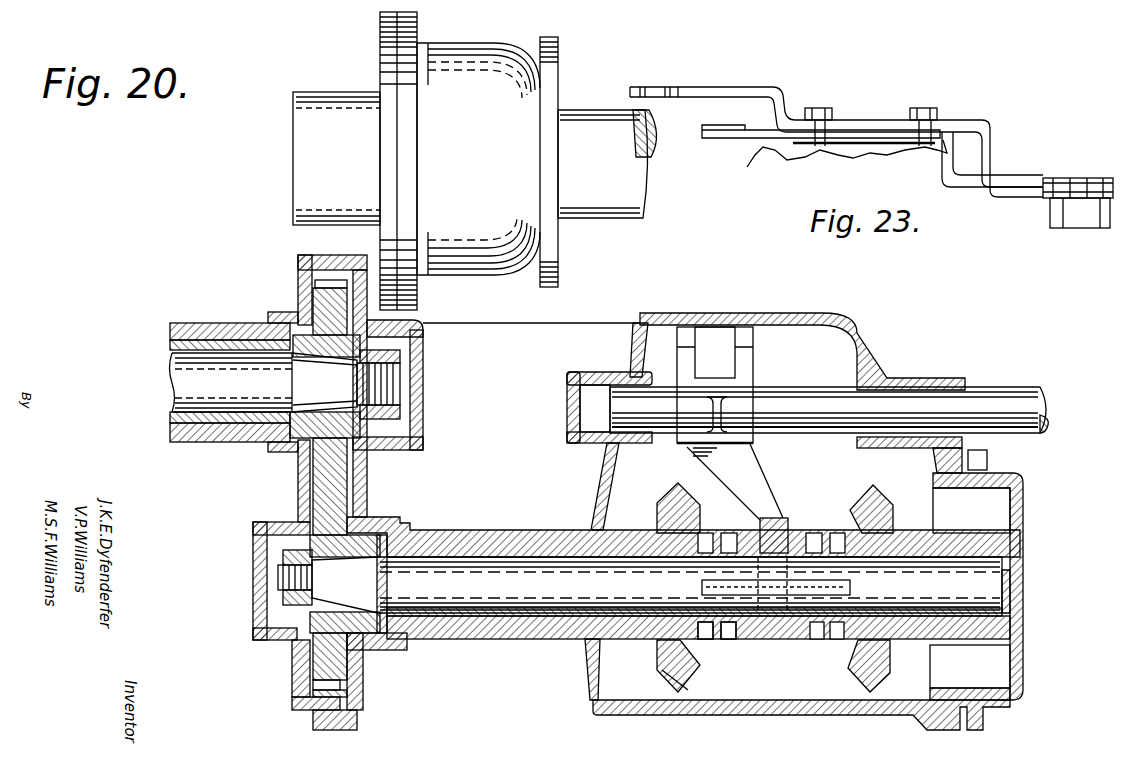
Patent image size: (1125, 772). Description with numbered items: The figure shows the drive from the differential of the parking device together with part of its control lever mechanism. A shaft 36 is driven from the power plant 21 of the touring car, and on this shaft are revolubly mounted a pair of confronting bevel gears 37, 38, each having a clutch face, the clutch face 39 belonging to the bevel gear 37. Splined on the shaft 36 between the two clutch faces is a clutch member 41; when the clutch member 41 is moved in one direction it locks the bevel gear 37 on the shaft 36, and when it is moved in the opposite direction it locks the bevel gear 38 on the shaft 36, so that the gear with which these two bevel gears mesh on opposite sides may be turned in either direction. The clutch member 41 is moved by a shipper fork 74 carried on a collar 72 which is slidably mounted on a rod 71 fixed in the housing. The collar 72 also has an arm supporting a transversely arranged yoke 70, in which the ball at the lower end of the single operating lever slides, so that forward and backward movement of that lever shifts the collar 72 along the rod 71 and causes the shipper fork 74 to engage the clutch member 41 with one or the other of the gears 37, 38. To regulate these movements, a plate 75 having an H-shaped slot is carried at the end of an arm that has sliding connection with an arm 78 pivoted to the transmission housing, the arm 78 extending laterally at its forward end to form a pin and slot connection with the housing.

In FIG. 20, the power plant 21 is at (256, 288).
In FIG. 20, the shaft 36 is at (525, 590).
In FIG. 20, the bevel gear 37 is at (862, 670).
In FIG. 20, the bevel gear 38 is at (665, 672).
In FIG. 20, the clutch face 39 is at (840, 540).
In FIG. 20, the clutch member 41 is at (750, 640).
In FIG. 20, the yoke 70 is at (745, 360).
In FIG. 20, the rod 71 is at (903, 407).
In FIG. 20, the collar 72 is at (735, 433).
In FIG. 20, the shipper fork 74 is at (776, 520).
In FIG. 23, the plate 75 is at (971, 192).
In FIG. 23, the arm 78 is at (967, 127).